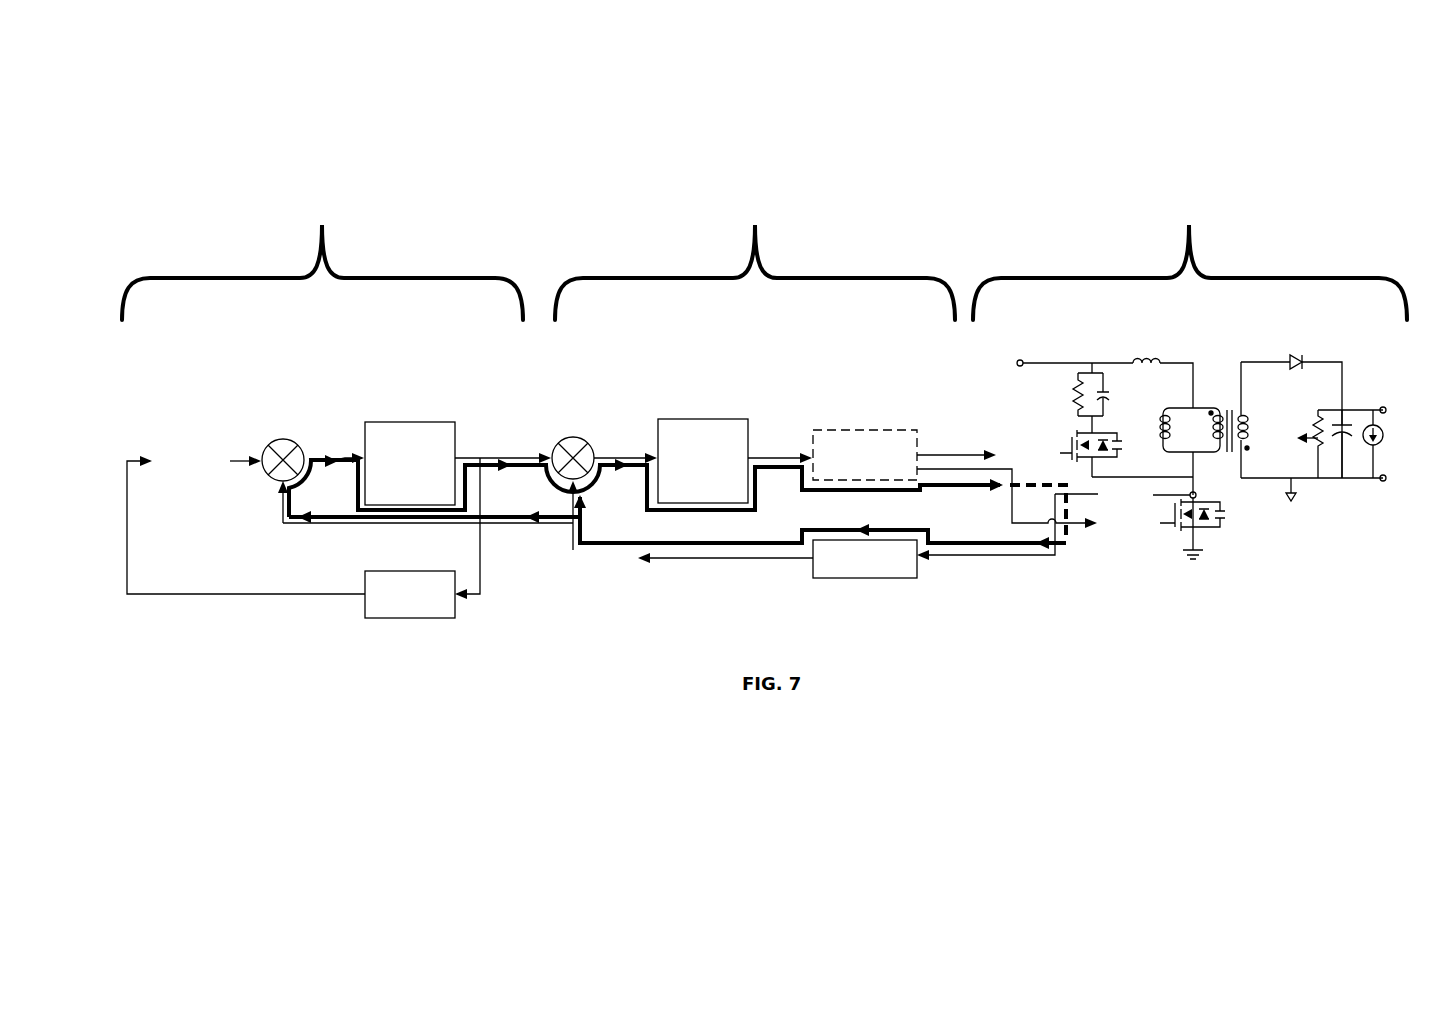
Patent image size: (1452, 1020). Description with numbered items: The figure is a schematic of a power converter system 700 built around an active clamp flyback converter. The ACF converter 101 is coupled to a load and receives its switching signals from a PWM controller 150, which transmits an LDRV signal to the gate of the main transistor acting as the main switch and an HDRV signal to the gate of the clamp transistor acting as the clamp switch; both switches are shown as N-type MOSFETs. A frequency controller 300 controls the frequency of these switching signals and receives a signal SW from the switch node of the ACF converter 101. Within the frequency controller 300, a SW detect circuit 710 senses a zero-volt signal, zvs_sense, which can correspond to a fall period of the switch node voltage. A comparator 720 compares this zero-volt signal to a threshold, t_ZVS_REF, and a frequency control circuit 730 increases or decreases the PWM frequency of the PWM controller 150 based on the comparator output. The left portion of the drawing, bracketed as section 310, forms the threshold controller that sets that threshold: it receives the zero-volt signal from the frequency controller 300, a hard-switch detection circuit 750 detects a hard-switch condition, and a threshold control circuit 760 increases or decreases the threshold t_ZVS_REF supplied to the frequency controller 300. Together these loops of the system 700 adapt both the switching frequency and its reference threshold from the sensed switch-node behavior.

The system 700 is at (208, 90).
The dead time adjustment loop 310 is at (322, 210).
The frequency controller 300 is at (755, 210).
The ACF converter 101 is at (1189, 215).
The hard-switch detection circuit 750 is at (282, 425).
The threshold control circuit 760 is at (423, 393).
The comparator 720 is at (598, 425).
The frequency control circuit 730 is at (716, 355).
The PWM controller 150 is at (870, 420).
The SW detect circuit 710 is at (870, 588).